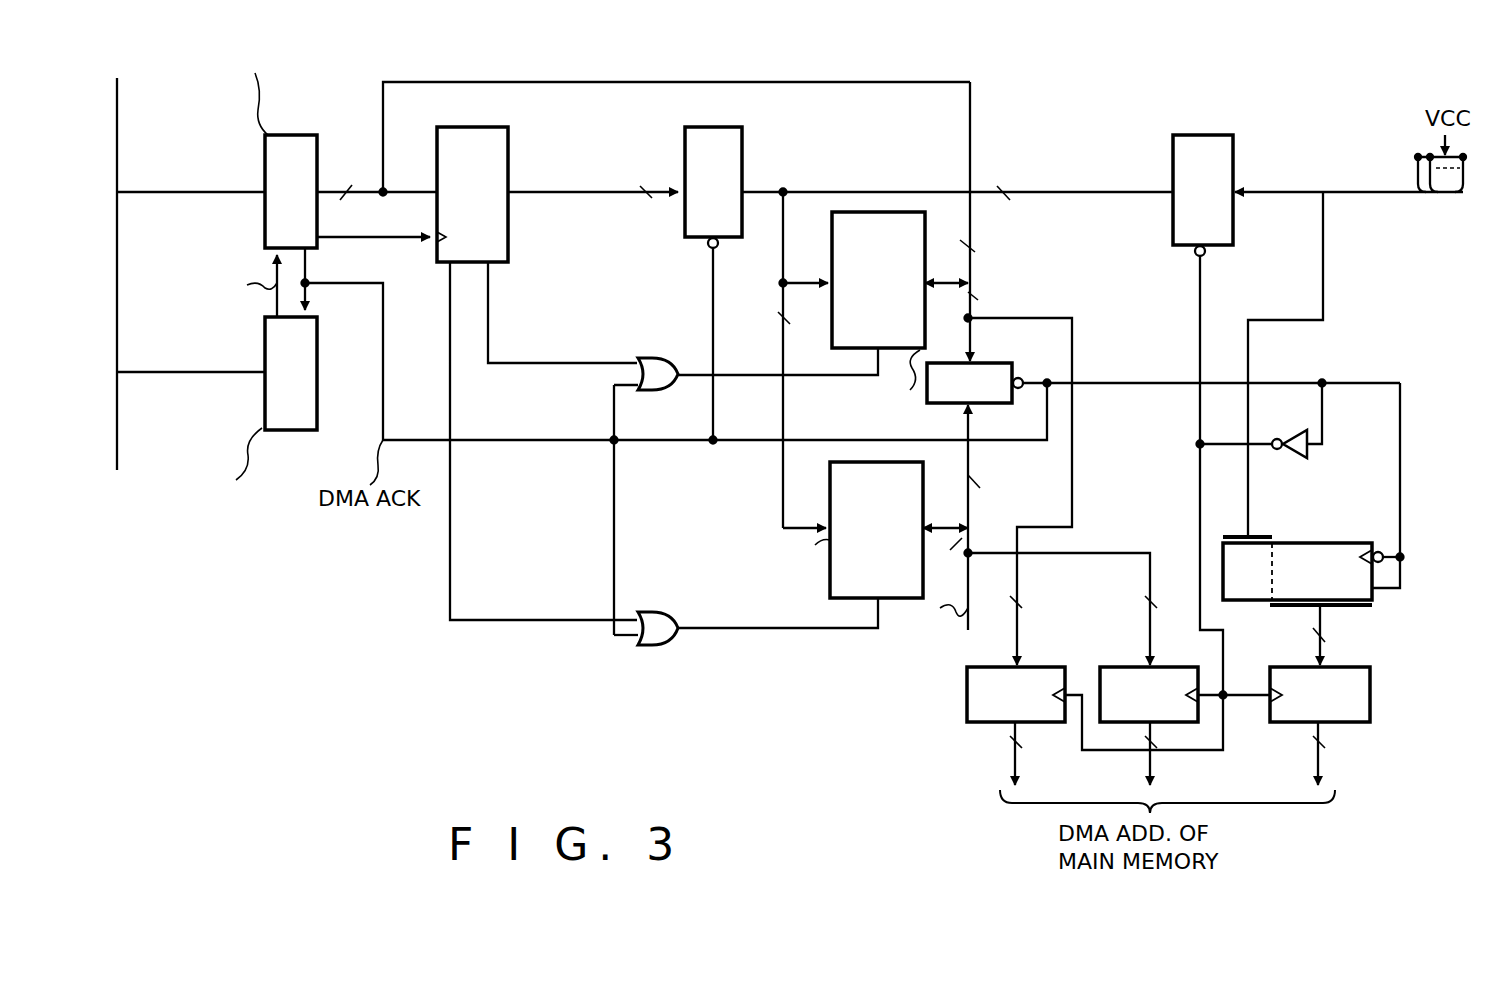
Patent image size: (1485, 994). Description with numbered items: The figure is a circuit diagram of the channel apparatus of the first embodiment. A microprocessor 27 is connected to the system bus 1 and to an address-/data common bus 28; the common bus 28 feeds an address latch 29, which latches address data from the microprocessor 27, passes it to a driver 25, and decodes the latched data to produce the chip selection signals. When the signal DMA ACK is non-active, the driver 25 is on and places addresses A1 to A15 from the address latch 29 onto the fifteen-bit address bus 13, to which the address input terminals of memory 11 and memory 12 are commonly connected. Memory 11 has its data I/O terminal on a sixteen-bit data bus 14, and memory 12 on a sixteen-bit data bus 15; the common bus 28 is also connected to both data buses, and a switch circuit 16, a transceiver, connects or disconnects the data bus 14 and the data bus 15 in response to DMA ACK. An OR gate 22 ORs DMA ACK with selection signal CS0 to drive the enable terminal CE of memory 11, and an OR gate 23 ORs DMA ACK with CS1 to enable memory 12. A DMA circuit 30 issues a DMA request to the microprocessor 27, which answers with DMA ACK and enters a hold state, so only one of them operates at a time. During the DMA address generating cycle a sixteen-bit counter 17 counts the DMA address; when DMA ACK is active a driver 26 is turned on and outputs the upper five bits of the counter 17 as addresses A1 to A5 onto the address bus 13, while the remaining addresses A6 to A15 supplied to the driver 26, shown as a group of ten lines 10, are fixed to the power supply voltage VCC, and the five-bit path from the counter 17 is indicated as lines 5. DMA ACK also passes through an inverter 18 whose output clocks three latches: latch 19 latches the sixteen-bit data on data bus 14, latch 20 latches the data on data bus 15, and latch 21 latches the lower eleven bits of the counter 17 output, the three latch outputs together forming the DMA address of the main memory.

The system bus 1 is at (117, 130).
The microprocessor 27 is at (290, 150).
The address-/data common bus 28 is at (367, 190).
The address latch 29 is at (482, 146).
The driver 25 is at (742, 140).
The address bus 13 is at (928, 192).
The DMA circuit 30 is at (275, 423).
The memory 11 is at (832, 335).
The memory 12 is at (830, 582).
The OR gate 22 is at (660, 372).
The OR gate 23 is at (658, 624).
The data bus 14 is at (970, 262).
The data bus 15 is at (1275, 186).
The switch circuit 16 is at (992, 384).
The driver 26 is at (1198, 142).
The address lines A6-A15 10 is at (1372, 186).
The inverter 18 is at (1295, 460).
The counter 17 is at (1348, 546).
The address lines A1-A5 5 is at (1240, 500).
The latch 19 is at (1040, 672).
The latch 20 is at (1122, 672).
The latch 21 is at (1300, 672).